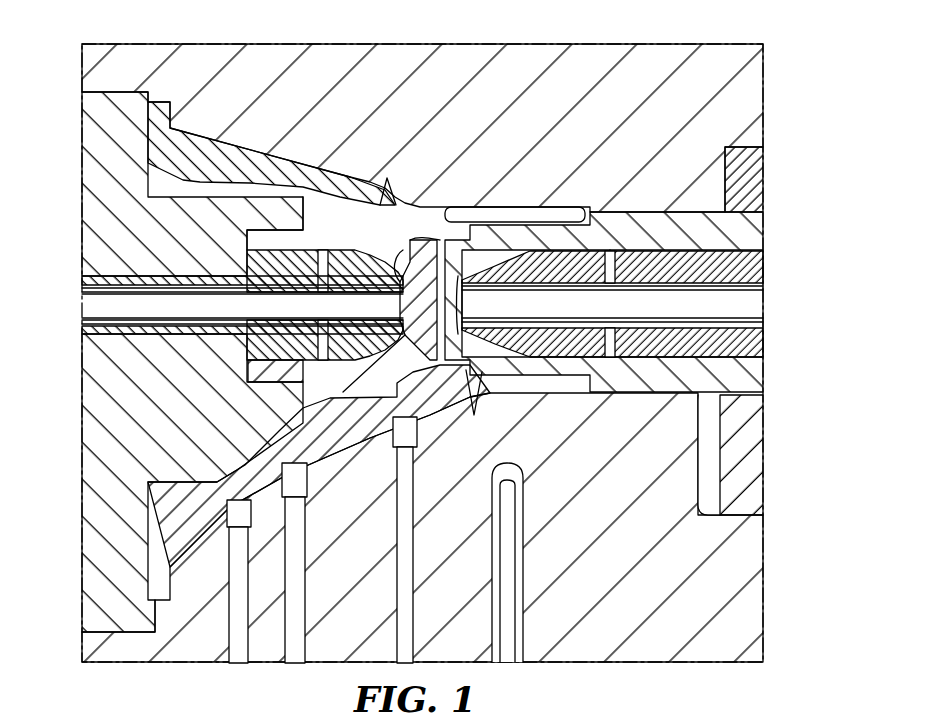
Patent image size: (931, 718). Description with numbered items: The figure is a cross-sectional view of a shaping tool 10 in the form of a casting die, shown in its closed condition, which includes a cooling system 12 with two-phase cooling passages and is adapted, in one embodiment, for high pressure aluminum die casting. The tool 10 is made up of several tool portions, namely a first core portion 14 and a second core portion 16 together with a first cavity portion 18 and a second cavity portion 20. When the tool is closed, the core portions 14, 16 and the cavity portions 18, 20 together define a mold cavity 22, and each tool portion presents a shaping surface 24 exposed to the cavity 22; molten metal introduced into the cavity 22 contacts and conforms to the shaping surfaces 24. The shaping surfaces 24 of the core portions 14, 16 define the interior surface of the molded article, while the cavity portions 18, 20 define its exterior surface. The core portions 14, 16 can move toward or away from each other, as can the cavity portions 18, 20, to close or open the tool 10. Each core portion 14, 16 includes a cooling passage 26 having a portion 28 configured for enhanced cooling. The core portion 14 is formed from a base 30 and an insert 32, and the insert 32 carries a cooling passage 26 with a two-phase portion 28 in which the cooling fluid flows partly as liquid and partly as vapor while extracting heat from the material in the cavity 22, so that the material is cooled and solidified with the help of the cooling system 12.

The shaping tool 10 is at (50, 143).
The cooling system 12 is at (256, 308).
The tool portion 14 is at (120, 486).
The tool portion 16 is at (745, 231).
The tool portion 18 is at (580, 70).
The tool portion 20 is at (728, 581).
The mold cavity 22 is at (485, 228).
The shaping surface 24 is at (388, 195).
The cooling passage 26 is at (323, 258).
The two-phase portion 28 is at (417, 262).
The base 30 is at (120, 233).
The insert 32 is at (258, 242).